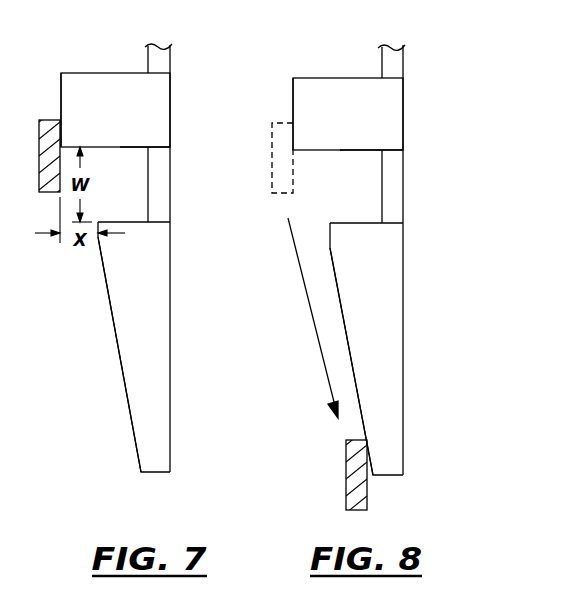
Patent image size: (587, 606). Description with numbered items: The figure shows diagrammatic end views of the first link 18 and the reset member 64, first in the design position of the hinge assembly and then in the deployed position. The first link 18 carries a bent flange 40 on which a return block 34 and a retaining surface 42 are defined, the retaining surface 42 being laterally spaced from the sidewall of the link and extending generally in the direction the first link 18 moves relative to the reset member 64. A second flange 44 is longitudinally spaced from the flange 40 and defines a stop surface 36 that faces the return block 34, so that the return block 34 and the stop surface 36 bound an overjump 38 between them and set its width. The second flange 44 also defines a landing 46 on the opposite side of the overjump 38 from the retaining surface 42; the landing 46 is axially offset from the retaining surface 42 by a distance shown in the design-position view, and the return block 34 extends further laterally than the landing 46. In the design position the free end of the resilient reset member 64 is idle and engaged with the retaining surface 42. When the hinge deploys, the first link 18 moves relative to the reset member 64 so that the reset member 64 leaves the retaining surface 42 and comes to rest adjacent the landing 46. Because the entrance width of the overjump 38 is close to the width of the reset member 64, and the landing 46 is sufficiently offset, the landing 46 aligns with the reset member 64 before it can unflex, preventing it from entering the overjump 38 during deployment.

In FIG. 7, the first link 18 is at (183, 86).
In FIG. 8, the first link 18 is at (422, 80).
In FIG. 7, the return block 34 is at (136, 148).
In FIG. 8, the return block 34 is at (355, 149).
In FIG. 7, the stop surface 36 is at (135, 221).
In FIG. 8, the stop surface 36 is at (368, 222).
In FIG. 7, the overjump 38 is at (113, 195).
In FIG. 8, the overjump 38 is at (337, 198).
In FIG. 7, the flange 40 is at (96, 92).
In FIG. 7, the retaining surface 42 is at (60, 89).
In FIG. 8, the retaining surface 42 is at (294, 90).
In FIG. 7, the second flange 44 is at (145, 310).
In FIG. 7, the landing 46 is at (124, 380).
In FIG. 8, the landing 46 is at (349, 341).
In FIG. 7, the reset member 64 is at (42, 120).
In FIG. 8, the reset member 64 is at (272, 123).